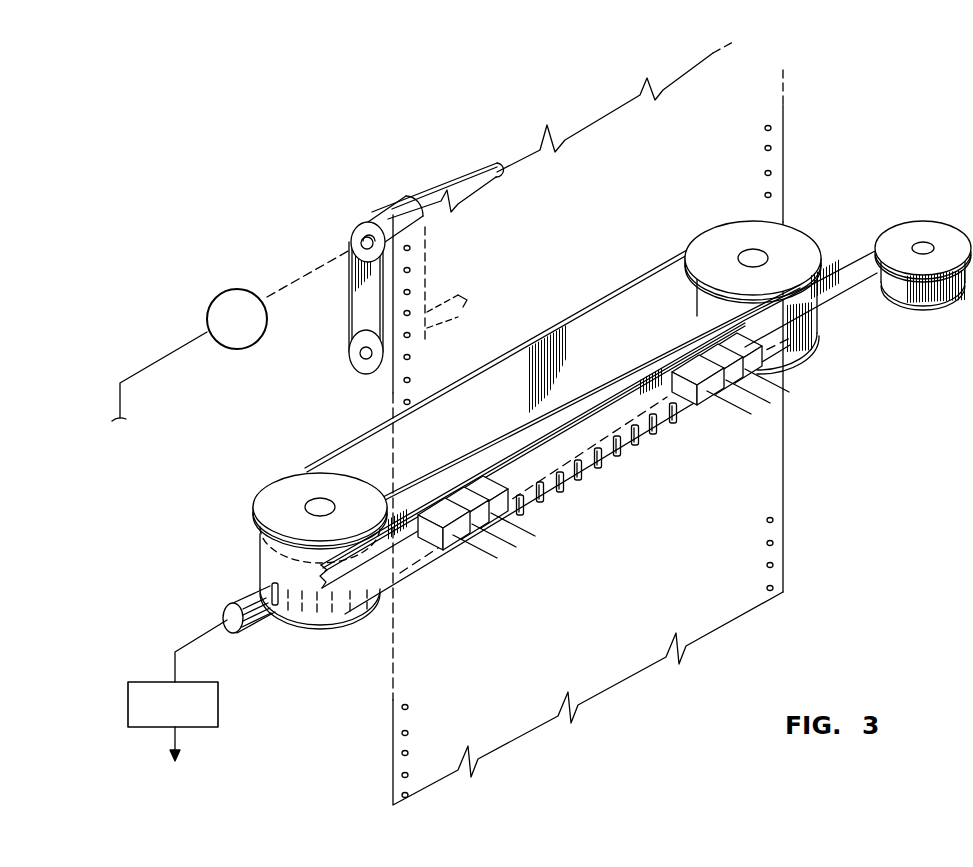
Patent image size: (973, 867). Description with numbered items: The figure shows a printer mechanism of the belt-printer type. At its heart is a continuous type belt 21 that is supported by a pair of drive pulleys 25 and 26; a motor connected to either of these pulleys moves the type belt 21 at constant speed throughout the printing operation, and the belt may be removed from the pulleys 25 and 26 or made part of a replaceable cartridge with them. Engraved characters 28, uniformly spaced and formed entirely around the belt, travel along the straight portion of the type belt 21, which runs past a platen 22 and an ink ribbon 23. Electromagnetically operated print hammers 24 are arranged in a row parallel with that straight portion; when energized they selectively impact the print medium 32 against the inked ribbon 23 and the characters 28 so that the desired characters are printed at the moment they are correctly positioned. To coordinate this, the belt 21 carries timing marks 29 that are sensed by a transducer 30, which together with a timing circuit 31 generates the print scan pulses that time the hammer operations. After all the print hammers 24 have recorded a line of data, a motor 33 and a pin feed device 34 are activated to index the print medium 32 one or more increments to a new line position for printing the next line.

The continuous type belt 21 is at (565, 318).
The platen 22 is at (598, 376).
The ink ribbon 23 is at (845, 262).
The print hammers 24 is at (449, 543).
The drive pulley 25 is at (280, 488).
The drive pulley 26 is at (792, 236).
The engraved characters 28 is at (527, 442).
The timing marks 29 is at (598, 478).
The transducer 30 is at (232, 606).
The timing circuit 31 is at (218, 698).
The print medium 32 is at (538, 197).
The motor 33 is at (237, 290).
The pin feed device 34 is at (383, 216).